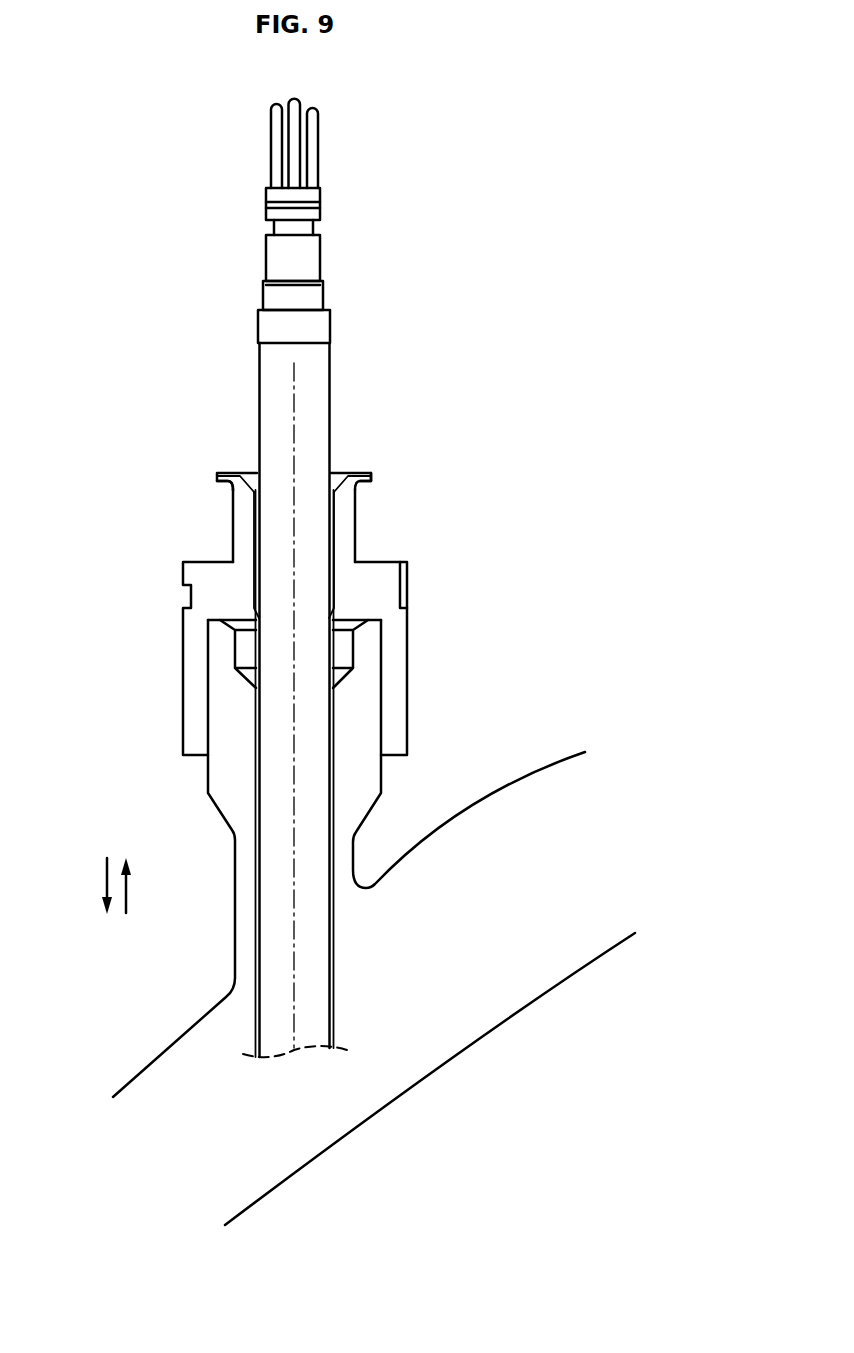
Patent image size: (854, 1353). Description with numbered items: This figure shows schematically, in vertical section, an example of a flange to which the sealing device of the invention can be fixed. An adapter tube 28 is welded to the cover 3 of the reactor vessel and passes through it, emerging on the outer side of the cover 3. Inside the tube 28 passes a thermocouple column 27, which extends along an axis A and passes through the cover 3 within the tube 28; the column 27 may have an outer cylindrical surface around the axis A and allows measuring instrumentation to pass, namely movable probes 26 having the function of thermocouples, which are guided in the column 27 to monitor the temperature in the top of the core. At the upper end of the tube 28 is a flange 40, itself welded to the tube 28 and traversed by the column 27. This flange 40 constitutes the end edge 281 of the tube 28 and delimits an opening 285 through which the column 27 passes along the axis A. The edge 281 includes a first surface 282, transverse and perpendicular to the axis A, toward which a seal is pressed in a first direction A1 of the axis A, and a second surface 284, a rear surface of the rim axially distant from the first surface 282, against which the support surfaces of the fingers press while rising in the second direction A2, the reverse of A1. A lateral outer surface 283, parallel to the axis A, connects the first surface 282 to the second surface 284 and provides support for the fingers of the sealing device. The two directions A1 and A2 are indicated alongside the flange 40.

The thermocouple 26 is at (322, 147).
The thermocouple column 27 is at (338, 410).
The tube 28 is at (358, 722).
The end edge 281 is at (220, 481).
The first surface 282 is at (353, 473).
The lateral outer surface 283 is at (373, 479).
The second surface 284 is at (370, 490).
The opening 285 is at (253, 475).
The flange 40 is at (225, 485).
The cover 3 is at (484, 924).
The axis A is at (294, 976).
The first direction A1 is at (105, 892).
The second direction A2 is at (127, 890).